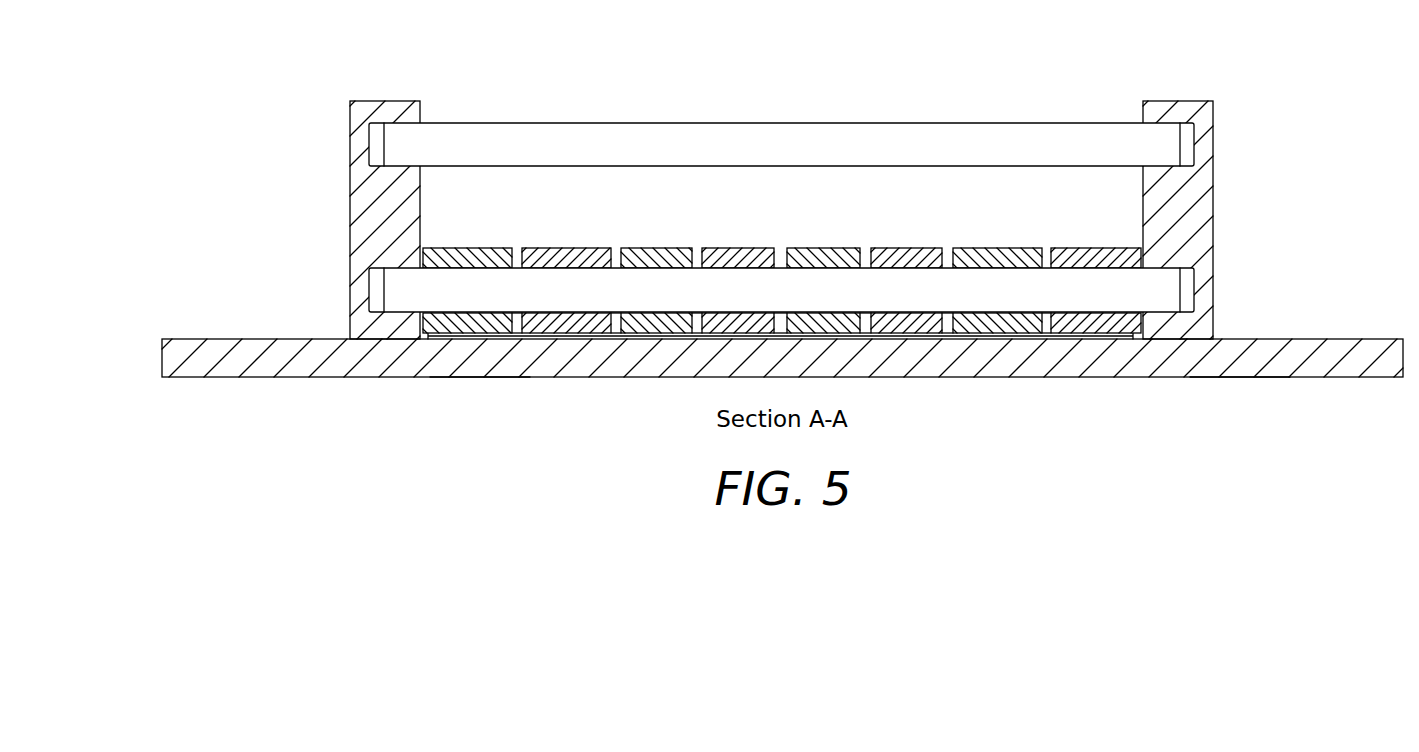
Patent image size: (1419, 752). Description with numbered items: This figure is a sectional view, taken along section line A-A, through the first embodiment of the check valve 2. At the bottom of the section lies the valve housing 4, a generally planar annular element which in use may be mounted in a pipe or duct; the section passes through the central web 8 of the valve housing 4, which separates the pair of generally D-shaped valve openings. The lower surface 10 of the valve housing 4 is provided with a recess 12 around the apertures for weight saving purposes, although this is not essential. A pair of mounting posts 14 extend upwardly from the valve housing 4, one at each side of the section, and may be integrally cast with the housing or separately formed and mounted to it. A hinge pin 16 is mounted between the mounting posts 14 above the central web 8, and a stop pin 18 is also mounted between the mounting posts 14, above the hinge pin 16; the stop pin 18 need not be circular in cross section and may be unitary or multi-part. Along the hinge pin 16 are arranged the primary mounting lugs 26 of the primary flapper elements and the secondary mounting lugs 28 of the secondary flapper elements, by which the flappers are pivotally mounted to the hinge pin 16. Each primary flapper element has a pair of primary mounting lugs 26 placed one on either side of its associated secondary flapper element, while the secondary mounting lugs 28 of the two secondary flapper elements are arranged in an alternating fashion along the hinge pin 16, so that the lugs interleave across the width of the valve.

The check valve 2 is at (790, 197).
The valve housing 4 is at (258, 367).
The central web 8 is at (1355, 367).
The lower surface 10 is at (1237, 378).
The recess 12 is at (478, 378).
The mounting post 14 is at (360, 214).
The hinge pin 16 is at (1168, 292).
The stop pin 18 is at (1168, 145).
The primary mounting lug 26 is at (466, 248).
The secondary mounting lug 28 is at (655, 248).